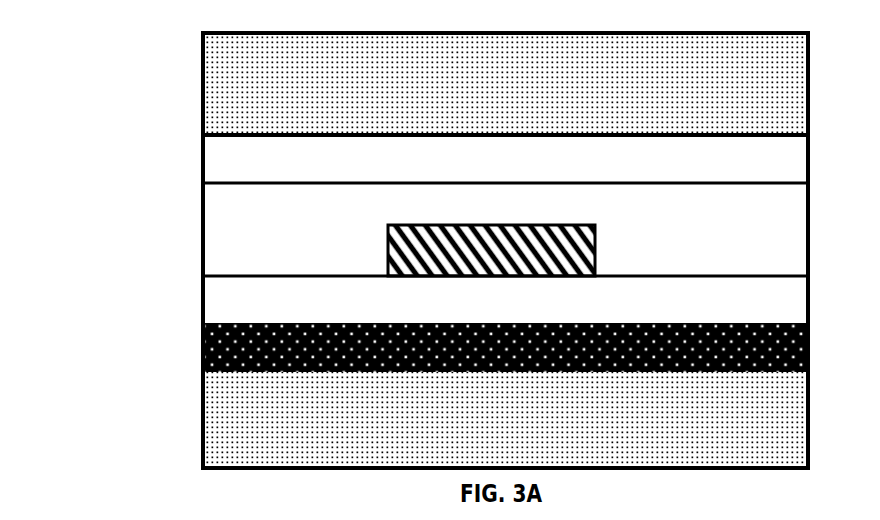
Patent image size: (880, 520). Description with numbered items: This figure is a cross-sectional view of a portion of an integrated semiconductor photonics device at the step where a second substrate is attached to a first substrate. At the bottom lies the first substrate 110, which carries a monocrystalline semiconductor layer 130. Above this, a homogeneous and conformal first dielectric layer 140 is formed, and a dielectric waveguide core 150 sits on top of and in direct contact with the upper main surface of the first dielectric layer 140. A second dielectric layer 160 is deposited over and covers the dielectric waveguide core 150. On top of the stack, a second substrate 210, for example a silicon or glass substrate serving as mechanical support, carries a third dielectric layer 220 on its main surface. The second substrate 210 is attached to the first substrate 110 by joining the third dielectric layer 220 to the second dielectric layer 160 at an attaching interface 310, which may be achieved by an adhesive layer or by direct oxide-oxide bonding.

The first substrate 110 is at (203, 452).
The monocrystalline semiconductor layer 130 is at (203, 348).
The first dielectric layer 140 is at (203, 305).
The dielectric waveguide core 150 is at (388, 250).
The second dielectric layer 160 is at (203, 219).
The third dielectric layer 220 is at (203, 160).
The second substrate 210 is at (203, 89).
The attaching interface 310 is at (237, 94).